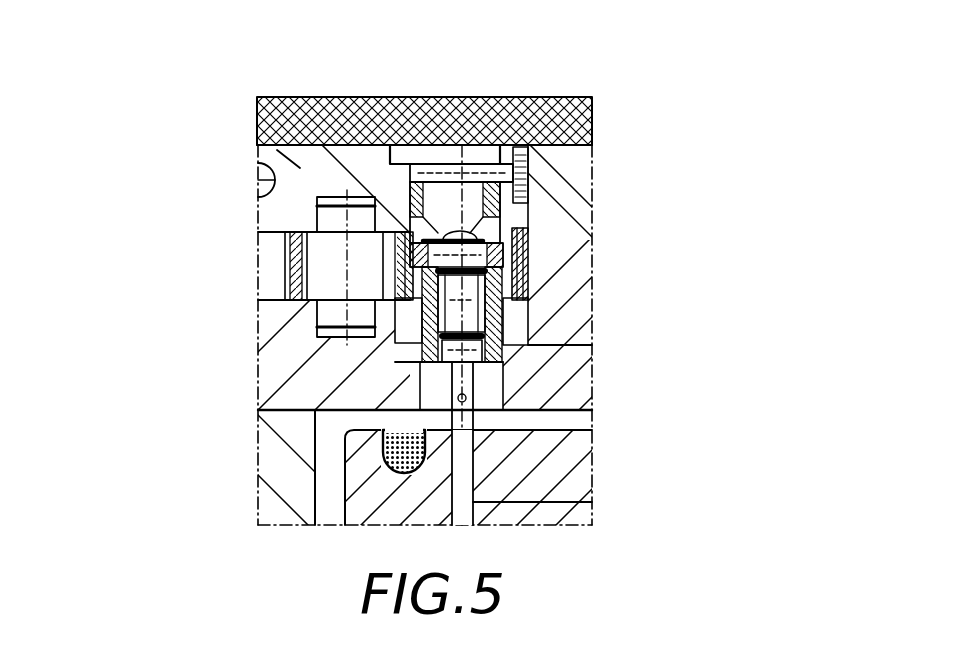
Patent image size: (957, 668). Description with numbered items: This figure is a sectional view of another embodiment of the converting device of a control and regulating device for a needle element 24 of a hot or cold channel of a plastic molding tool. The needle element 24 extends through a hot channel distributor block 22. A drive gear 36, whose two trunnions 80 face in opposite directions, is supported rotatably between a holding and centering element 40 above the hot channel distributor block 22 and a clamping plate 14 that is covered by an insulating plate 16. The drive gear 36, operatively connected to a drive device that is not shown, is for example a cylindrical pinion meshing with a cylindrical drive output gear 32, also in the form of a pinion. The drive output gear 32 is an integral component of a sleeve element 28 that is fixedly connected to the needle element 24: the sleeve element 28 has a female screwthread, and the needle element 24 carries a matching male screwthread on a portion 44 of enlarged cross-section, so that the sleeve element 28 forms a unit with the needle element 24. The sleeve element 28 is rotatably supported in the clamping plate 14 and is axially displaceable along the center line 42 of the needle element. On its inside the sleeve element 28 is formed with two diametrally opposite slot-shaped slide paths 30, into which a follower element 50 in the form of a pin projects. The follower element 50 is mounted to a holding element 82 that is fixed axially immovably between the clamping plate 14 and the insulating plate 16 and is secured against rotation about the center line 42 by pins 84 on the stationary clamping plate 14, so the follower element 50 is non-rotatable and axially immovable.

The clamping plate 14 is at (300, 167).
The insulating plate 16 is at (350, 117).
The hot channel distributor block 22 is at (560, 473).
The needle element 24 is at (468, 457).
The sleeve element 28 is at (500, 350).
The slot-shaped slide paths 30 is at (385, 270).
The drive output gear 32 is at (528, 282).
The drive gear 36 is at (317, 228).
The holding and centering element 40 is at (260, 412).
The center line 42 is at (467, 397).
The portion of enlarged cross-section 44 is at (400, 330).
The follower element 50 is at (512, 240).
The trunnions 80 is at (317, 207).
The holding element 82 is at (448, 155).
The pins 84 is at (532, 152).